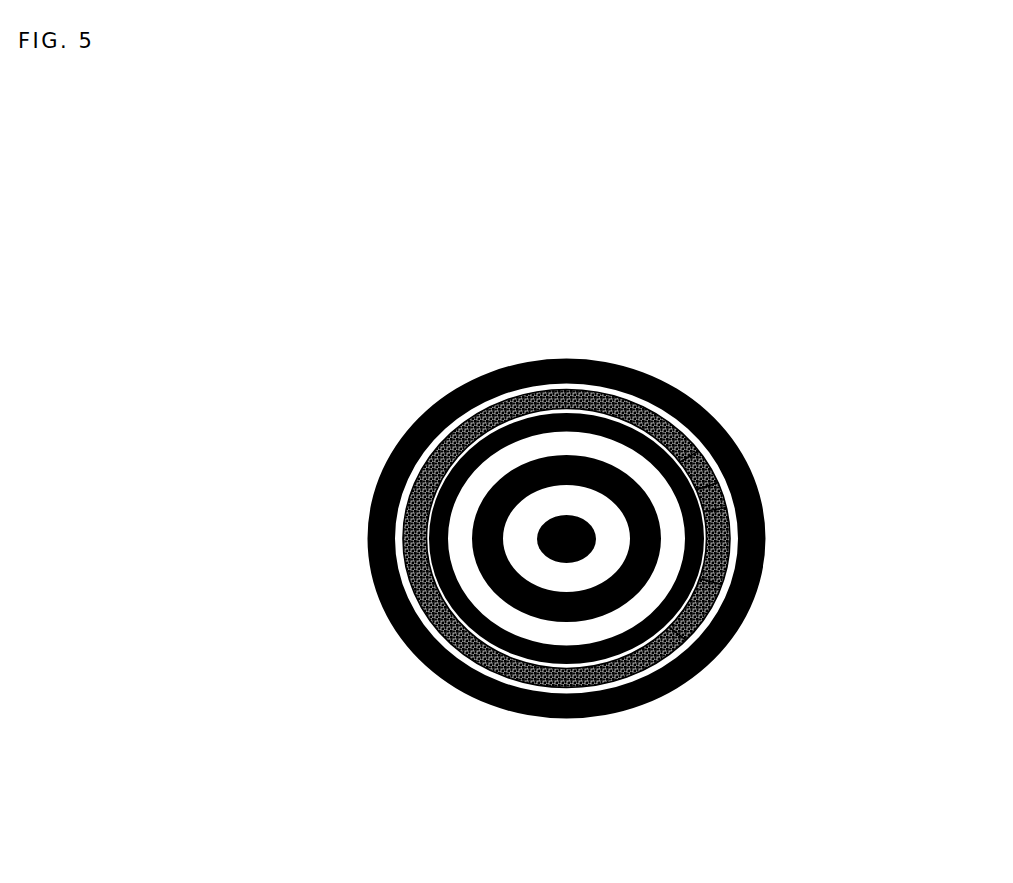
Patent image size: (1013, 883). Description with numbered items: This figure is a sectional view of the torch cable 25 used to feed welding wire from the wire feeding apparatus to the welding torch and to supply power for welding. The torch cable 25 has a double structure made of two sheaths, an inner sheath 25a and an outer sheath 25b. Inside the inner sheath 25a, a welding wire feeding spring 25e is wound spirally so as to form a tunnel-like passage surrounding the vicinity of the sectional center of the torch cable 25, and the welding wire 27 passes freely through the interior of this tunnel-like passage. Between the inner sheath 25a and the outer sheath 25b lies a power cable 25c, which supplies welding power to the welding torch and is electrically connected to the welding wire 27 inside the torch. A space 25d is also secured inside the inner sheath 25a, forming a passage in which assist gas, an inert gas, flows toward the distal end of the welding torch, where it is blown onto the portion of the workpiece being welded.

The torch cable 25 is at (636, 551).
The inner sheath 25a is at (713, 418).
The outer sheath 25b is at (655, 570).
The power cable 25c is at (748, 470).
The space 25d is at (673, 508).
The welding wire feeding spring 25e is at (680, 388).
The welding wire 27 is at (573, 563).